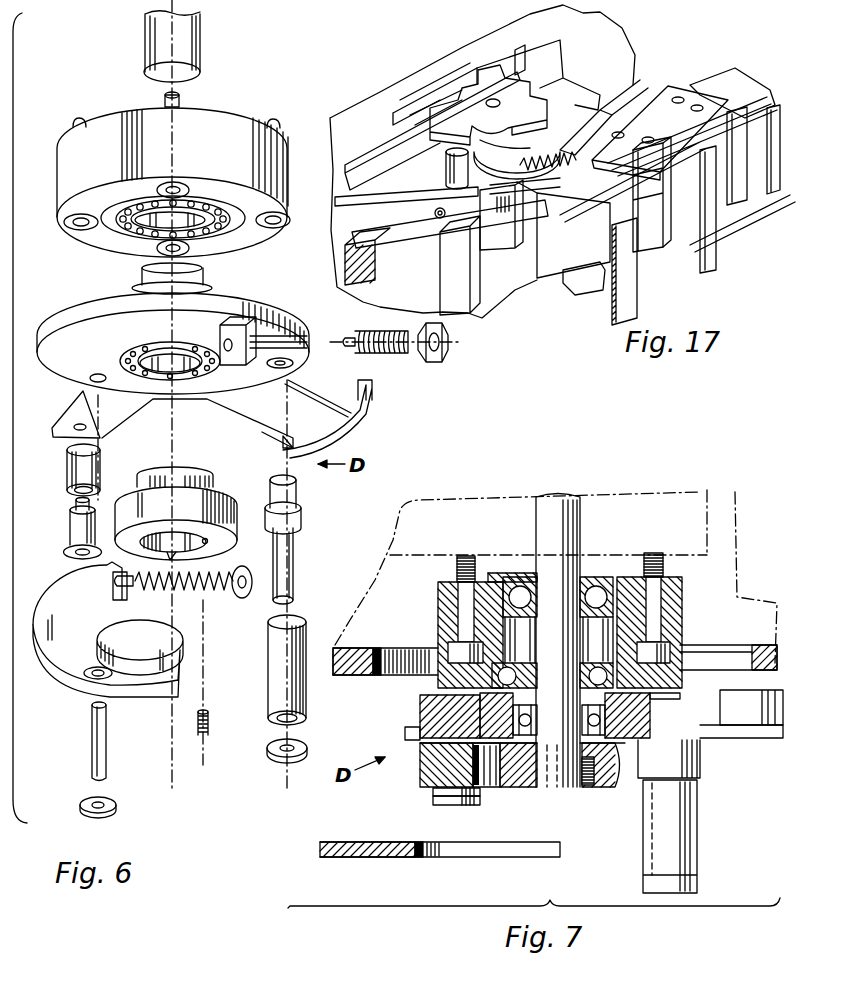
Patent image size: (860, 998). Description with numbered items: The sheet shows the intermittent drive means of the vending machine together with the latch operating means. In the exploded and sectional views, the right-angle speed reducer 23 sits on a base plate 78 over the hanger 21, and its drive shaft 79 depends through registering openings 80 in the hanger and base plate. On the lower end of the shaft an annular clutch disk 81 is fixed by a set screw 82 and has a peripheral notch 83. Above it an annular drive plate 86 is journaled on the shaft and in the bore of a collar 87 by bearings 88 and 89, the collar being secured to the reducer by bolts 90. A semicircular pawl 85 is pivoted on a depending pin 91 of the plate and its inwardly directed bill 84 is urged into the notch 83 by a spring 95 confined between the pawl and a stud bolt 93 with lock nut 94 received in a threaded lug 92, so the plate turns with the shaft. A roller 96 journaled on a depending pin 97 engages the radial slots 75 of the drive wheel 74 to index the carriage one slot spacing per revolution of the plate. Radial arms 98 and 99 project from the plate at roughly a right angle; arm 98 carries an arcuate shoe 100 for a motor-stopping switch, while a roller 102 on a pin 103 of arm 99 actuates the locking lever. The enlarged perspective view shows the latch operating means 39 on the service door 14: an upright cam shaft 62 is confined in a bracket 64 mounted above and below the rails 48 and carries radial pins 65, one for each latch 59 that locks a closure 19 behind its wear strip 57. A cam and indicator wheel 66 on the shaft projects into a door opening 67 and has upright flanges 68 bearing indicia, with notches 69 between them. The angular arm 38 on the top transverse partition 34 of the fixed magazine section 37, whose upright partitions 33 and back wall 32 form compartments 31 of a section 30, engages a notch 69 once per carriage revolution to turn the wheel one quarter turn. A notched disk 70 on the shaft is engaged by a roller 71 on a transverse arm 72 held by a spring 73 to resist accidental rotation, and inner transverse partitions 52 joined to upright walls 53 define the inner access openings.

In FIG. 17, the service door 14 is at (382, 88).
In FIG. 17, the closures 19 is at (505, 272).
In FIG. 7, the frame or hanger 21 is at (343, 676).
In FIG. 7, the right-angle speed reducer 23 is at (738, 500).
In FIG. 17, the magazine sections 30 is at (642, 288).
In FIG. 17, the compartments 31 is at (748, 118).
In FIG. 17, the back wall 32 is at (745, 178).
In FIG. 17, the upright partitions 33 is at (576, 228).
In FIG. 17, the transverse partitions 34 is at (728, 90).
In FIG. 17, the fixed magazine section 37 is at (712, 212).
In FIG. 17, the angular arm 38 is at (592, 122).
In FIG. 17, the latch operating means 39 is at (522, 60).
In FIG. 17, the rails or tracks 48 is at (390, 277).
In FIG. 17, the transverse partitions 52 is at (640, 100).
In FIG. 17, the upright plates or walls 53 is at (582, 272).
In FIG. 17, the wear strip 57 is at (472, 303).
In FIG. 17, the keeper element or latch 59 is at (437, 218).
In FIG. 17, the cam shaft 62 is at (500, 248).
In FIG. 17, the bearing plate or bracket 64 is at (382, 148).
In FIG. 17, the lugs or pins 65 is at (450, 250).
In FIG. 17, the cam and indicator wheel 66 is at (432, 100).
In FIG. 17, the opening 67 is at (495, 48).
In FIG. 17, the upright flanges 68 is at (590, 62).
In FIG. 17, the peripheral notches or slots 69 is at (558, 102).
In FIG. 17, the notched disk 70 is at (446, 168).
In FIG. 17, the follower or roller 71 is at (445, 183).
In FIG. 17, the transverse arm 72 is at (403, 185).
In FIG. 17, the spring 73 is at (560, 168).
In FIG. 7, the drive wheel 74 is at (358, 857).
In FIG. 7, the radial notches or slots 75 is at (500, 857).
In FIG. 7, the base plate 78 is at (343, 656).
In FIG. 6, the drive shaft 79 is at (200, 32).
In FIG. 7, the drive shaft 79 is at (580, 503).
In FIG. 7, the registering openings 80 is at (392, 650).
In FIG. 6, the clutch plate or disk 81 is at (245, 479).
In FIG. 7, the clutch plate or disk 81 is at (598, 787).
In FIG. 6, the set screw 82 is at (210, 722).
In FIG. 7, the set screw 82 is at (585, 787).
In FIG. 6, the notch 83 is at (145, 546).
In FIG. 6, the bill or hook 84 is at (183, 625).
In FIG. 6, the pawl or clutch arm 85 is at (70, 680).
In FIG. 6, the drive member or plate 86 is at (52, 318).
In FIG. 7, the drive member or plate 86 is at (420, 700).
In FIG. 6, the housing or collar 87 is at (57, 167).
In FIG. 7, the housing or collar 87 is at (683, 598).
In FIG. 6, the bearing 88 is at (146, 350).
In FIG. 7, the bearing 88 is at (607, 728).
In FIG. 6, the bearing 89 is at (128, 228).
In FIG. 7, the bearing 89 is at (597, 663).
In FIG. 6, the bolts 90 is at (86, 120).
In FIG. 7, the bolts 90 is at (670, 532).
In FIG. 6, the pin 91 is at (108, 728).
In FIG. 6, the screw-threaded lug 92 is at (232, 368).
In FIG. 6, the stud bolt 93 is at (382, 355).
In FIG. 6, the lock nut 94 is at (438, 362).
In FIG. 6, the spring 95 is at (232, 592).
In FIG. 6, the roller 96 is at (268, 694).
In FIG. 7, the roller 96 is at (697, 818).
In FIG. 6, the drive element or pin 97 is at (299, 541).
In FIG. 7, the drive element or pin 97 is at (700, 775).
In FIG. 6, the radial arm 98 is at (250, 424).
In FIG. 7, the radial arm 98 is at (745, 738).
In FIG. 6, the radial arm 99 is at (124, 422).
In FIG. 7, the radial arm 99 is at (405, 731).
In FIG. 6, the arcuate shoe 100 is at (352, 430).
In FIG. 7, the arcuate shoe 100 is at (758, 688).
In FIG. 6, the roller 102 is at (100, 472).
In FIG. 7, the roller 102 is at (433, 792).
In FIG. 6, the element or pin 103 is at (72, 530).
In FIG. 7, the element or pin 103 is at (433, 802).